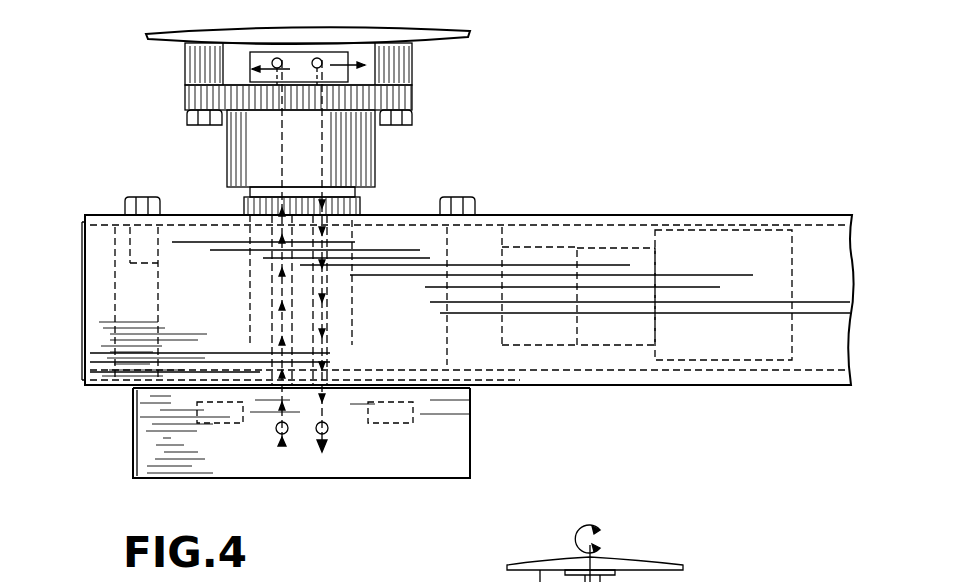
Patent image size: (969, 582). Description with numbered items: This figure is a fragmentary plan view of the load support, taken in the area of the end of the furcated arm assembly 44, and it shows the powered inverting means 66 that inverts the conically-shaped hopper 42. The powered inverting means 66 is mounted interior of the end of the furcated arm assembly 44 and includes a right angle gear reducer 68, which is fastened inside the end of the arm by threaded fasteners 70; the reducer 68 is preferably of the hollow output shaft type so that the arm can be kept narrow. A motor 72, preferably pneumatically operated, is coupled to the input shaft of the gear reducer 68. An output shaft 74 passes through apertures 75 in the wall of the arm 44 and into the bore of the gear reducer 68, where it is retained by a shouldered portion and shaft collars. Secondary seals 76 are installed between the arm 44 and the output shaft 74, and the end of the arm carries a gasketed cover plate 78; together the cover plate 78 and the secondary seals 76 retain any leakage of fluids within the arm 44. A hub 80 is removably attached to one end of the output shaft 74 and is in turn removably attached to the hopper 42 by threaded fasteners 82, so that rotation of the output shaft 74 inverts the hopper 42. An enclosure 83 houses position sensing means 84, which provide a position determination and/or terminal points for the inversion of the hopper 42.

The conically-shaped hopper 42 is at (440, 38).
The furcated arm assembly 44 is at (619, 262).
The powered inverting means 66 is at (108, 422).
The right angle gear reducer 68 is at (100, 385).
The threaded fasteners 70 is at (138, 197).
The motor 72 is at (468, 272).
The output shaft 74 is at (250, 272).
The apertures 75 is at (235, 215).
The secondary seals 76 is at (368, 213).
The gasketed cover plate 78 is at (85, 330).
The hub 80 is at (413, 94).
The threaded fasteners 82 is at (413, 122).
The enclosure 83 is at (404, 480).
The position sensing means 84 is at (213, 427).